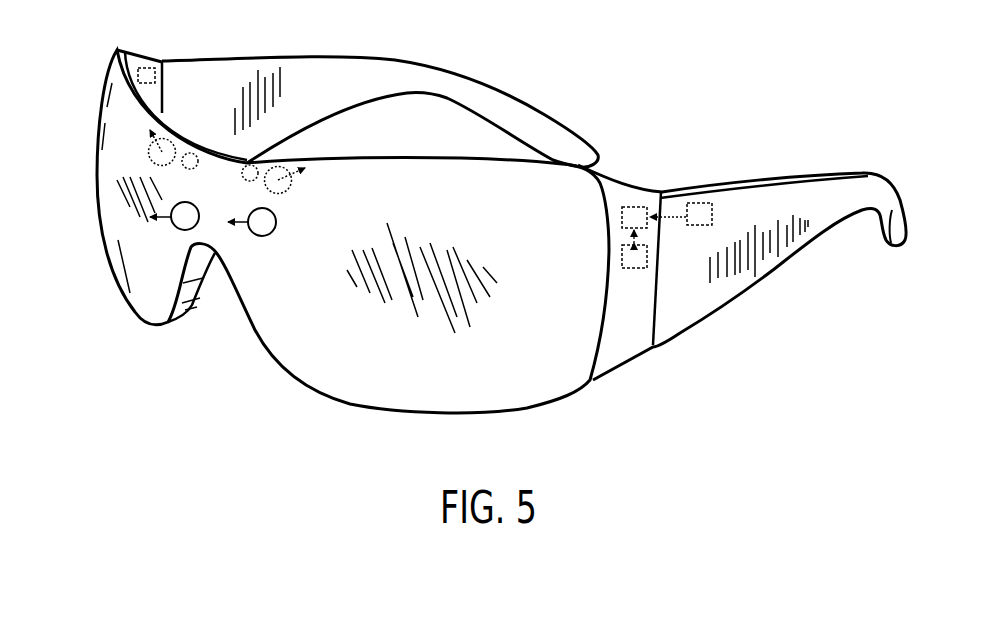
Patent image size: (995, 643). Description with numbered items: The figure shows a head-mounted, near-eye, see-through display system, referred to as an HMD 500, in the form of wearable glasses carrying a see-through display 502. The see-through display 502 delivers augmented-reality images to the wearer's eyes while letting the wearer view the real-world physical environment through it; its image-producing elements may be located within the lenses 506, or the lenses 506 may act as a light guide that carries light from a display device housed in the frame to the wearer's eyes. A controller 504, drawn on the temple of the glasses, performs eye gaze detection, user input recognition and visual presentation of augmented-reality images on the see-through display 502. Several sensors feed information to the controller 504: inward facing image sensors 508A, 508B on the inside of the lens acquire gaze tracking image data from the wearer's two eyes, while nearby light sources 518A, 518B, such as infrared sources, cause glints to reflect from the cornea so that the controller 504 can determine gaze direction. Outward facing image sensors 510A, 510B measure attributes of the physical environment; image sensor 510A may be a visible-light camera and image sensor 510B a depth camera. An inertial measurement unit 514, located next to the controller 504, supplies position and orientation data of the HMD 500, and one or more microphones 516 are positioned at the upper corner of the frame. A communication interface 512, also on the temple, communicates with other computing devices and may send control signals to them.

The HMD 500 is at (543, 45).
The see-through display 502 is at (302, 350).
The controller 504 is at (634, 206).
The lenses 506 is at (187, 295).
The inward facing image sensor 508A is at (285, 192).
The inward facing image sensor 508B is at (168, 163).
The outward facing image sensor 510A is at (262, 237).
The outward facing image sensor 510B is at (185, 230).
The communication interface 512 is at (700, 203).
The inertial measurement unit 514 is at (647, 257).
The microphone 516 is at (148, 66).
The light source 518A is at (250, 166).
The light source 518B is at (190, 153).